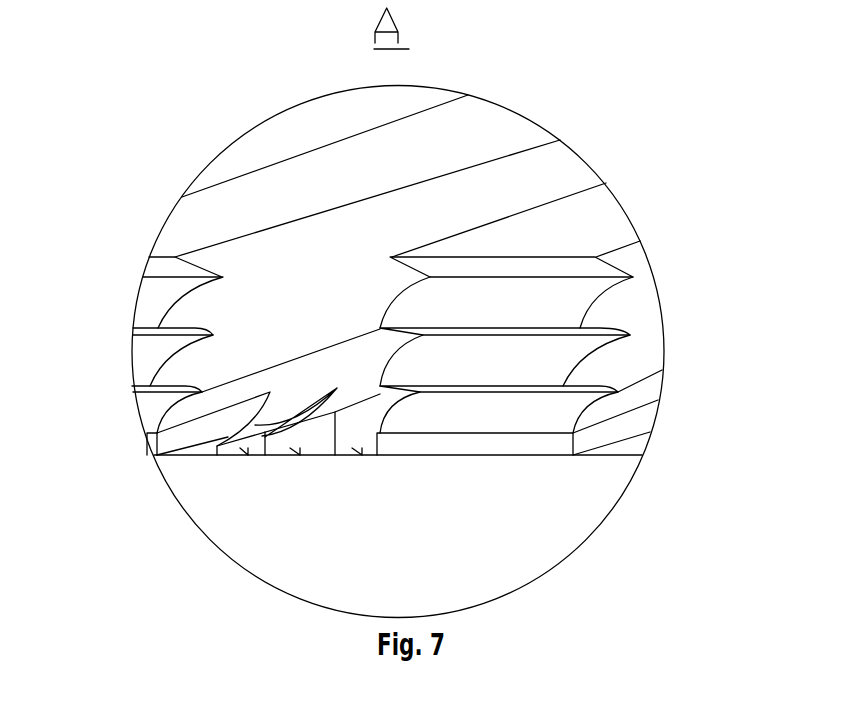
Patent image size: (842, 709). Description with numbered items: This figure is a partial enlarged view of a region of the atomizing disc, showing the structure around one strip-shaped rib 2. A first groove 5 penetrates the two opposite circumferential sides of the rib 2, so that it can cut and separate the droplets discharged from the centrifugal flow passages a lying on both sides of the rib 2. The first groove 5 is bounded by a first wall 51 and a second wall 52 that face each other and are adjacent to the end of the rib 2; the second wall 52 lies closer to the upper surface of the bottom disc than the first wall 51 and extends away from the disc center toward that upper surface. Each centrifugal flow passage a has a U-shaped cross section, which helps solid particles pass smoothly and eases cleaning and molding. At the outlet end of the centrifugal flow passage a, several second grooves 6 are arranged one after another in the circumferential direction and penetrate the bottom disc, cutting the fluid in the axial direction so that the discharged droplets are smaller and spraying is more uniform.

The rib 2 is at (498, 238).
The first groove 5 is at (452, 320).
The first wall 51 is at (557, 267).
The second wall 52 is at (560, 307).
The second groove 6 is at (242, 413).
The centrifugal flow passage a is at (353, 345).